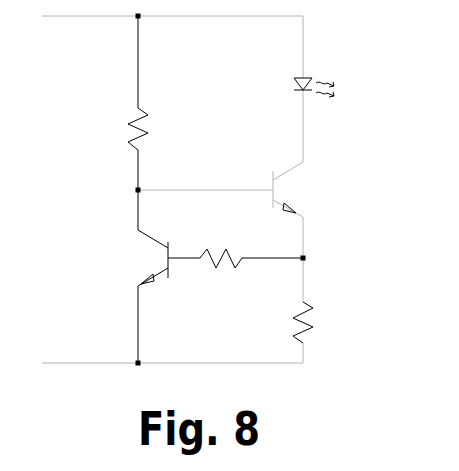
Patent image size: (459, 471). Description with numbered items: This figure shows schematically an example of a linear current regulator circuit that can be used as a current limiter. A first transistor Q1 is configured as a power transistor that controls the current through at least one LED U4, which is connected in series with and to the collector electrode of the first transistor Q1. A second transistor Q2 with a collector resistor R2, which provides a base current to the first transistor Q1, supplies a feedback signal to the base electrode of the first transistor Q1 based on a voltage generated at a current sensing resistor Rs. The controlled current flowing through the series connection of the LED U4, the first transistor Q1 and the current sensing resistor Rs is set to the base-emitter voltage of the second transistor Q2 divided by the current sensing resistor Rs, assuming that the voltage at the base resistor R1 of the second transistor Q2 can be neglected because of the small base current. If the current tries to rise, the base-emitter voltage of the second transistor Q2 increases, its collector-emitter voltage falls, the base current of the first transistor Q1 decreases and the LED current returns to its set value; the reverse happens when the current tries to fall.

The collector resistor R2 is at (149, 129).
The LED U4 is at (318, 86).
The first transistor Q1 is at (295, 189).
The second transistor Q2 is at (146, 258).
The base resistor R1 is at (205, 250).
The current sensing resistor Rs is at (313, 322).